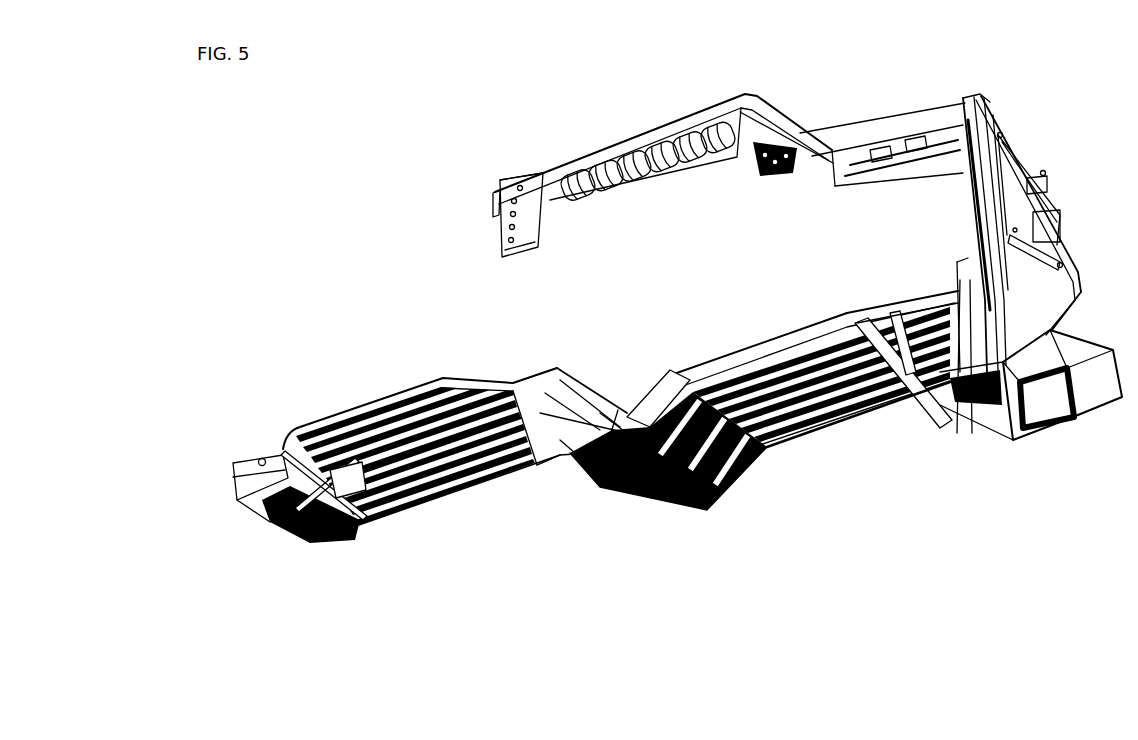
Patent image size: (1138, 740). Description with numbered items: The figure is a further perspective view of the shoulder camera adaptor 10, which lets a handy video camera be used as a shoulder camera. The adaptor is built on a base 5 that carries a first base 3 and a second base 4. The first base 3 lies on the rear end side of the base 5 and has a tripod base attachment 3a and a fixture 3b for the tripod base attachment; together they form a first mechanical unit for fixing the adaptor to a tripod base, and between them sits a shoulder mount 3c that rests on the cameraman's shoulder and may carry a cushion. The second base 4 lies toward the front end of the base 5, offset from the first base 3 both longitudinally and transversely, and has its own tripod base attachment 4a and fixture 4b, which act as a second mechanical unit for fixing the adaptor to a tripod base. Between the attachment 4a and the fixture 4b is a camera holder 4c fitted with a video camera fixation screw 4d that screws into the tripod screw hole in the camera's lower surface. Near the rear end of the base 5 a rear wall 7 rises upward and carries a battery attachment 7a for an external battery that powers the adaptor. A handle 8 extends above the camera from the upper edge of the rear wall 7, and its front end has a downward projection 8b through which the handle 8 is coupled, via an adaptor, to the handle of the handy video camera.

The shoulder camera adaptor 10 is at (380, 230).
The handle 8 is at (658, 128).
The projection 8b is at (500, 235).
The rear wall 7 is at (958, 202).
The battery attachment 7a is at (1040, 160).
The base 5 is at (617, 365).
The second base 4 is at (396, 565).
The tripod base attachment 4a is at (280, 528).
The fixture for the tripod base attachment 4b is at (557, 462).
The camera holder 4c is at (440, 458).
The video camera fixation screw 4d is at (353, 462).
The first base 3 is at (879, 470).
The tripod base attachment 3a is at (622, 503).
The fixture for the tripod base attachment 3b is at (960, 410).
The shoulder mount 3c is at (800, 447).